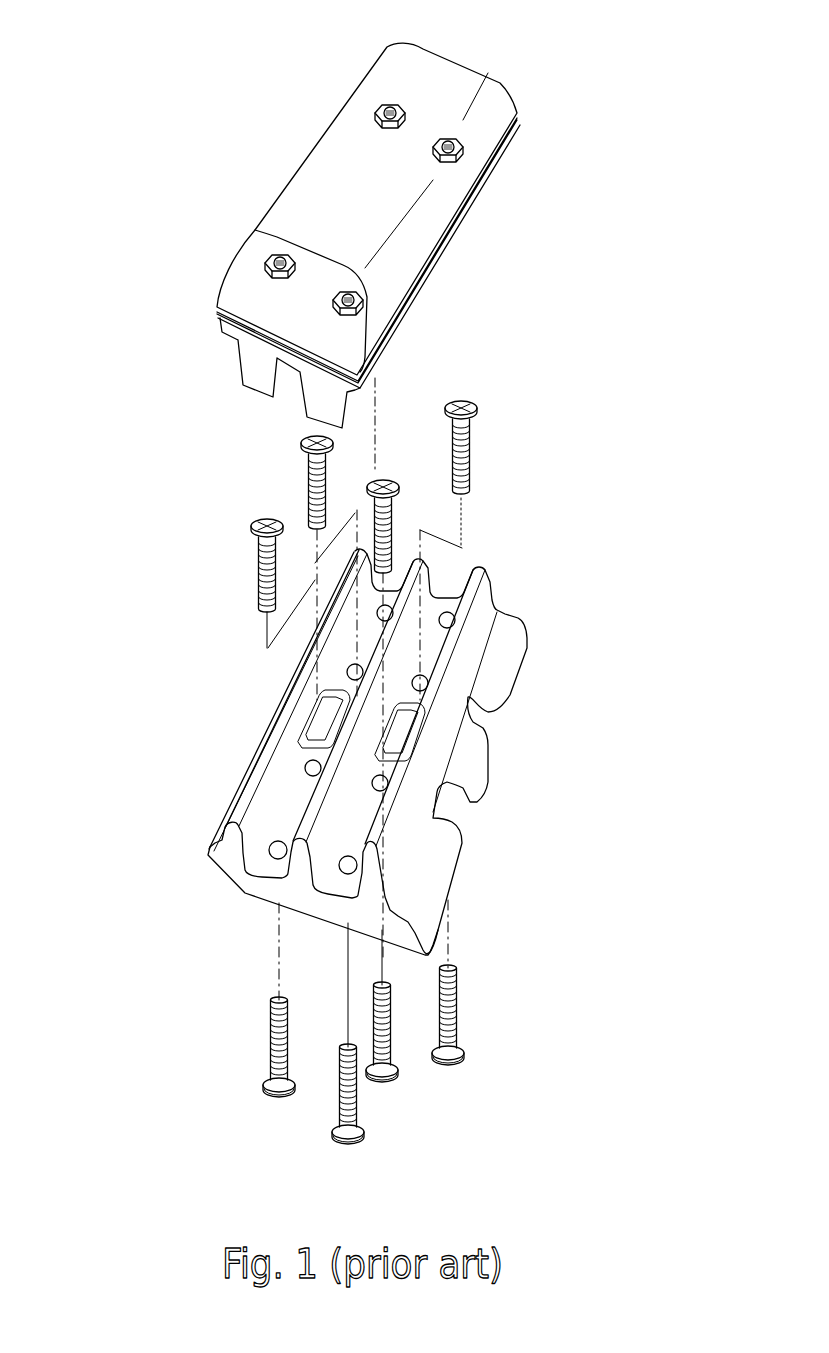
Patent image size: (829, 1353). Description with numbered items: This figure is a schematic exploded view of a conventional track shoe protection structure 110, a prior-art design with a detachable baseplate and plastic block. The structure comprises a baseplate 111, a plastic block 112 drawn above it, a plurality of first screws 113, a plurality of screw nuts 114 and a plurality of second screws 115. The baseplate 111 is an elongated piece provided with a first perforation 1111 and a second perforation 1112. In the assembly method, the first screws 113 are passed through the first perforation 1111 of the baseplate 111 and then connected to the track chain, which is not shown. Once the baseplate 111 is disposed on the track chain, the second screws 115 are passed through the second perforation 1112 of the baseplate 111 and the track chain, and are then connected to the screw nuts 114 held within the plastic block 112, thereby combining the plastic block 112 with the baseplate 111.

The track shoe protection structure 110 is at (134, 104).
The baseplate 111 is at (205, 861).
The plastic block 112 is at (211, 284).
The first screws 113 is at (308, 472).
The screw nuts 114 is at (373, 108).
The second screws 115 is at (452, 1012).
The first perforation 1111 is at (428, 686).
The second perforation 1112 is at (455, 620).